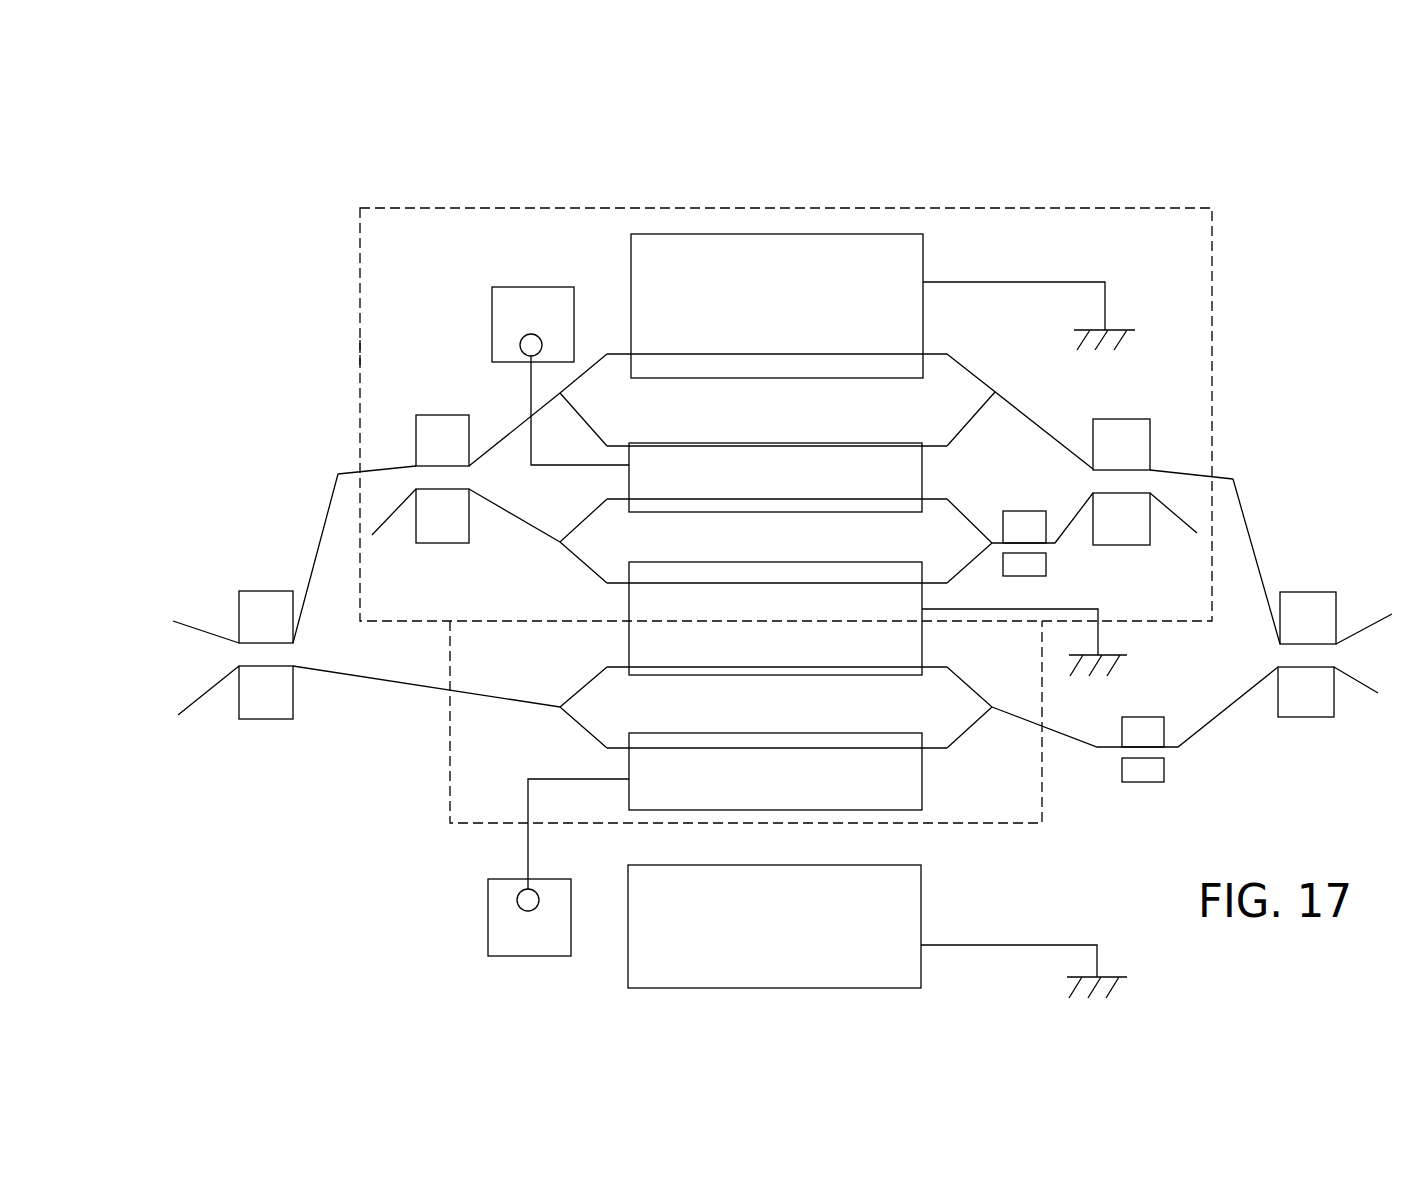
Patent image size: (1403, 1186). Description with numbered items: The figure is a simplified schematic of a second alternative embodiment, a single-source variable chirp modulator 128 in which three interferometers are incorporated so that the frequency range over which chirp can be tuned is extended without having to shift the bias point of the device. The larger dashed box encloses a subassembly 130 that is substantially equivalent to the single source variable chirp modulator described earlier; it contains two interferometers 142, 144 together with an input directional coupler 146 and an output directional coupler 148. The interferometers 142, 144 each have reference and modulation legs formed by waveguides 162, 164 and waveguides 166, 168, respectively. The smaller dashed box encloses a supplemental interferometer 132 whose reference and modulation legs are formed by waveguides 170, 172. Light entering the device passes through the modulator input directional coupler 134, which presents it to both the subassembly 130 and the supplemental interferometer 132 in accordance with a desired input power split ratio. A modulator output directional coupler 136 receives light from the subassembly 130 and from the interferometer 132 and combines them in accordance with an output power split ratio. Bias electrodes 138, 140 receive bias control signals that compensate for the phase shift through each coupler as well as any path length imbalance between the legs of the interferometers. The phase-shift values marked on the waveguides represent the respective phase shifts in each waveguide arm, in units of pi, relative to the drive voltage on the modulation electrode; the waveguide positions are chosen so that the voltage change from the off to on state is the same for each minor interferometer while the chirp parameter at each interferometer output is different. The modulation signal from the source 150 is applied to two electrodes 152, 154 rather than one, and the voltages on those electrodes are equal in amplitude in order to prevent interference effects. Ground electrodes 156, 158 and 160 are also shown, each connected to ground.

The modulator 128 is at (1130, 200).
The subassembly 130 is at (360, 352).
The supplemental interferometer 132 is at (448, 732).
The modulator input directional coupler 134 is at (265, 607).
The modulator output directional coupler 136 is at (1317, 612).
The bias electrode 138 is at (1058, 567).
The bias electrode 140 is at (1180, 762).
The interferometer 142 is at (973, 360).
The interferometer 144 is at (577, 572).
The input directional coupler 146 is at (442, 432).
The output directional coupler 148 is at (1112, 428).
The source 150 is at (533, 287).
The electrode 152 is at (920, 470).
The electrode 154 is at (908, 772).
The ground electrode 156 is at (900, 260).
The ground electrode 158 is at (640, 640).
The ground electrode 160 is at (682, 882).
The waveguide 162 is at (793, 352).
The waveguide 164 is at (863, 443).
The waveguide 166 is at (877, 498).
The waveguide 168 is at (808, 583).
The waveguide 170 is at (827, 665).
The waveguide 172 is at (590, 737).